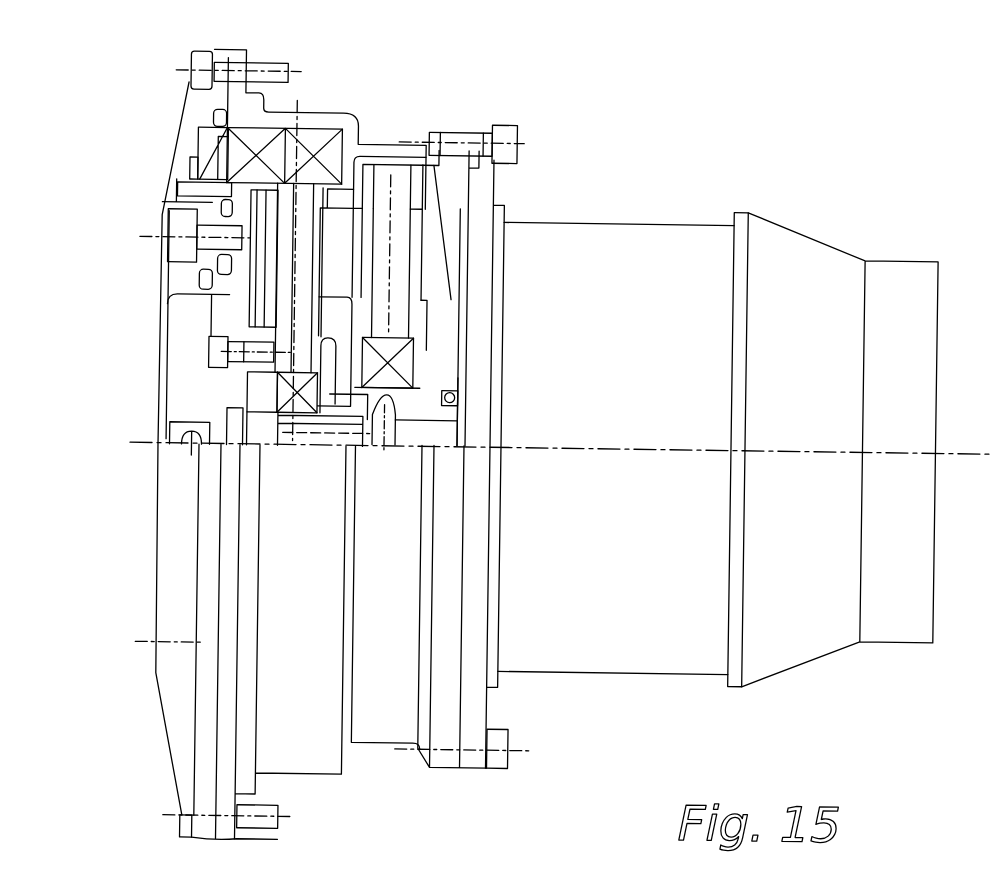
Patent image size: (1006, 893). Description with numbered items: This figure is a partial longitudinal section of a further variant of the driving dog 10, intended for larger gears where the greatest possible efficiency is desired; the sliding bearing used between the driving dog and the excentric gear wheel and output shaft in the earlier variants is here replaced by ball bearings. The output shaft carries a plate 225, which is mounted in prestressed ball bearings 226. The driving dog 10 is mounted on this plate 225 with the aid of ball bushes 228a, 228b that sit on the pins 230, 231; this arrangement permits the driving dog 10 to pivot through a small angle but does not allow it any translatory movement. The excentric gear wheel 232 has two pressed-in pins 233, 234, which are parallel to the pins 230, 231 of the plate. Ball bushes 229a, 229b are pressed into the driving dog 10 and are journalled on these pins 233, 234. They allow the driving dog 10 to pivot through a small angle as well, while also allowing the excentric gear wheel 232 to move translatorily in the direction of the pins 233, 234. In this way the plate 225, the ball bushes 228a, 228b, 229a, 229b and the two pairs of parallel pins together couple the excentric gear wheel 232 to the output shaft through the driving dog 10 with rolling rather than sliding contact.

The driving dog 10 is at (342, 237).
The plate 225 is at (240, 194).
The prestressed ball bearings 226 is at (269, 151).
The ball bush 228a is at (260, 274).
The ball bush 228b is at (135, 256).
The ball bush 229a is at (418, 256).
The ball bush 229b is at (557, 299).
The pin 230 is at (286, 338).
The pin 231 is at (168, 368).
The excentric gear wheel 232 is at (416, 177).
The pressed-in pin 233 is at (394, 236).
The pressed-in pin 234 is at (534, 195).